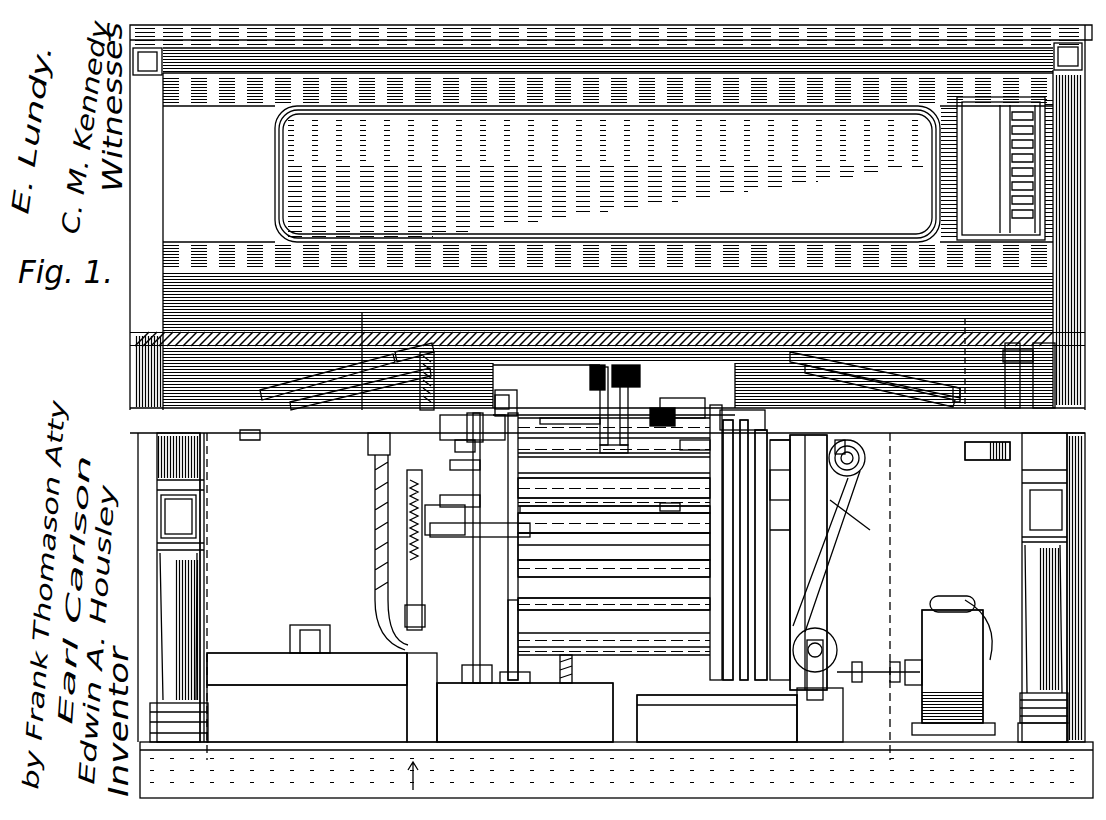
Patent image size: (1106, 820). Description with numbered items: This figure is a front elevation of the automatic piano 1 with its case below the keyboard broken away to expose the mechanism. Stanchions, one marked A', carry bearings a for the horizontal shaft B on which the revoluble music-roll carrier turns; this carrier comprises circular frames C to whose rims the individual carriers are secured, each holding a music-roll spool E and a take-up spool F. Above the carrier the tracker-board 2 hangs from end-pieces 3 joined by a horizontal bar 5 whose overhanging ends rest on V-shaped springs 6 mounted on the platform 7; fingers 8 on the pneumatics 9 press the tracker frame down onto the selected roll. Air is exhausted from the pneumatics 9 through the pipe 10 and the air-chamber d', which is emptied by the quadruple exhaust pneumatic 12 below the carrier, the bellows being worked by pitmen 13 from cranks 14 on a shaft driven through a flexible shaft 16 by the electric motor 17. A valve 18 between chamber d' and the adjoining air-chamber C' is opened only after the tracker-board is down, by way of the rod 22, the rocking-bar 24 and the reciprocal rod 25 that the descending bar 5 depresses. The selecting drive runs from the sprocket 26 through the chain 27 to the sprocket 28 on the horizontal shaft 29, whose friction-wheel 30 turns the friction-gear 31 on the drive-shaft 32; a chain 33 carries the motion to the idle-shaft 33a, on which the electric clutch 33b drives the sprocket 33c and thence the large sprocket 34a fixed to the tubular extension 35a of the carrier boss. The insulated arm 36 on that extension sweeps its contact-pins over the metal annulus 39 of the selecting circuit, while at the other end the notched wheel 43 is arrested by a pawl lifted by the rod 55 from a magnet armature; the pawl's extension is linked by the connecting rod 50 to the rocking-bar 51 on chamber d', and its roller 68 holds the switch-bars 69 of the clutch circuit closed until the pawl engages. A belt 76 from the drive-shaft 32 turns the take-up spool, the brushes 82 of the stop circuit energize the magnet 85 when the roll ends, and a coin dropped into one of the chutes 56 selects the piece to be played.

The frame 1 is at (971, 353).
The tracker-board 2 is at (512, 408).
The end-pieces 3 is at (411, 776).
The horizontal bar 5 is at (360, 352).
The springs 6 is at (830, 395).
The platform 7 is at (245, 440).
The fingers 8 is at (865, 385).
The pneumatics 9 is at (905, 390).
The pipe 10 is at (572, 668).
The quadruple exhaust pneumatic 12 is at (712, 695).
The pitmen 13 is at (880, 670).
The cranks 14 is at (850, 660).
The flexible shaft 16 is at (887, 703).
The electric motor 17 is at (952, 666).
The valve 18 is at (410, 690).
The vertically disposed rod 22 is at (440, 575).
The rocking-bar 24 is at (410, 482).
The reciprocal rod 25 is at (404, 391).
The sprocket 26 is at (825, 635).
The chain 27 is at (850, 510).
The sprocket 28 is at (862, 470).
The horizontal shaft 29 is at (868, 458).
The friction-wheel 30 is at (855, 490).
The friction-gear 31 is at (855, 520).
The drive-shaft 32 is at (775, 485).
The chain 33 is at (770, 425).
The idle-shaft 33a is at (673, 412).
The electric clutch 33b is at (685, 456).
The sprocket 33c is at (615, 503).
The large sprocket 34a is at (710, 548).
The roller 35a is at (580, 600).
The insulated arm 36 is at (766, 560).
The metal annulus 39 is at (614, 597).
The wheel 43 is at (480, 500).
The connecting rod 50 is at (505, 640).
The rocking-bar 51 is at (511, 669).
The rod 55 is at (560, 418).
The chutes 56 is at (1005, 172).
The roller 68 is at (480, 465).
The switch-bars 69 is at (475, 448).
The belt 76 is at (700, 398).
The brushes 82 is at (613, 459).
The magnet 85 is at (1005, 465).
The rail A' is at (741, 550).
The horizontal shaft B is at (477, 548).
The circular frames C is at (748, 550).
The air-chamber C' is at (307, 655).
The music roll spool E is at (614, 549).
The take-up spool F is at (614, 492).
The bearings a is at (415, 585).
The air-chamber d' is at (543, 701).